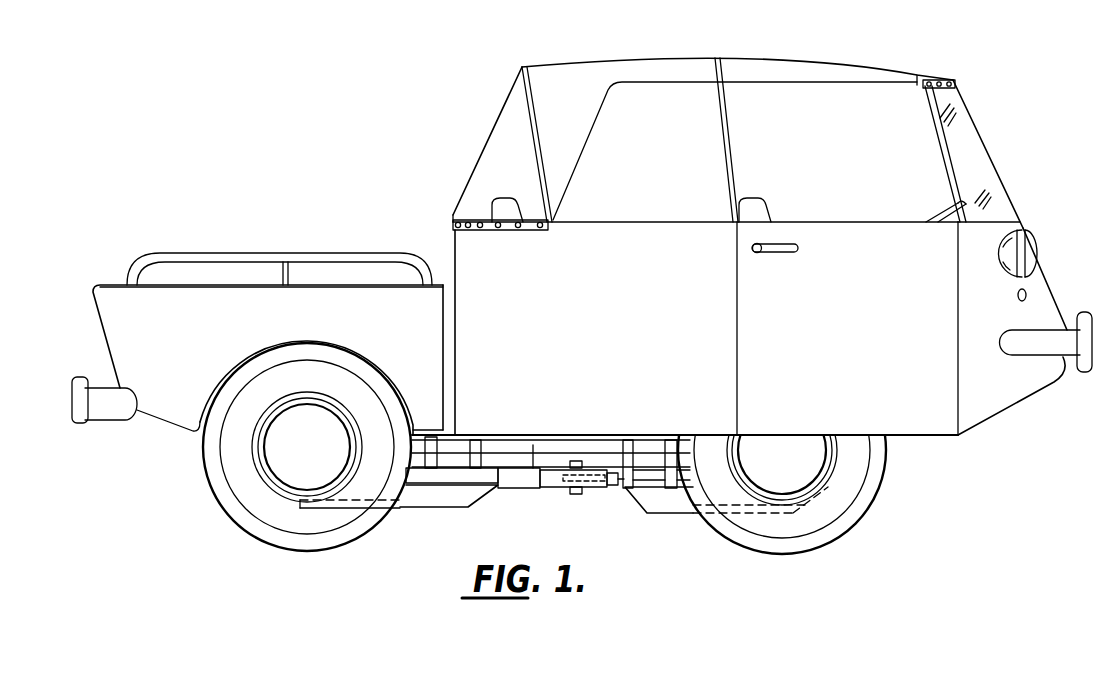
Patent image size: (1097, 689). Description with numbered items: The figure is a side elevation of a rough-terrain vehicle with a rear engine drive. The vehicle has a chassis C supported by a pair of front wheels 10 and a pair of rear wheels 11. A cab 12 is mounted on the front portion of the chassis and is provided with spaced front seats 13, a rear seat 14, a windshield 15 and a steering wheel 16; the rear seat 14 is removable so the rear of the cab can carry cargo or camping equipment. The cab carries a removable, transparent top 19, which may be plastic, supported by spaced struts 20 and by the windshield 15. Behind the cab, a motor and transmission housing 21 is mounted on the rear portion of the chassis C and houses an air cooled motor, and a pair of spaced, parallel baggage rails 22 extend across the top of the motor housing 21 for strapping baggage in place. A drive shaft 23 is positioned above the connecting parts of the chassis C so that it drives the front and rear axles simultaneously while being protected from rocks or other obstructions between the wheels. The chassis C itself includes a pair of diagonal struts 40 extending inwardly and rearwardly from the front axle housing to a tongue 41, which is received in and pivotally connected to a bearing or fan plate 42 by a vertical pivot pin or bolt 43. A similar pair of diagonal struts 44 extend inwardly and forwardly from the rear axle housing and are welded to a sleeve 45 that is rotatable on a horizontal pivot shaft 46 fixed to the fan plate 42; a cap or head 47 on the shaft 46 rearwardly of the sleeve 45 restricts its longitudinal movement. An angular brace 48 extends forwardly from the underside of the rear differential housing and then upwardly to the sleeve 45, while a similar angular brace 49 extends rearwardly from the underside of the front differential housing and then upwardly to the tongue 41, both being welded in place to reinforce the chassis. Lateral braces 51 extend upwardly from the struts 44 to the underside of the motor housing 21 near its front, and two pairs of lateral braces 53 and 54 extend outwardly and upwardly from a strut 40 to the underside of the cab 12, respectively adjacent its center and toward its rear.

The front wheels 10 is at (847, 516).
The rear wheels 11 is at (247, 522).
The cab 12 is at (921, 437).
The front seats 13 is at (761, 208).
The rear seat 14 is at (495, 200).
The windshield 15 is at (968, 144).
The steering wheel 16 is at (941, 216).
The top 19 is at (650, 66).
The struts 20 is at (536, 145).
The motor and transmission housing 21 is at (95, 297).
The baggage rails 22 is at (300, 254).
The drive shaft 23 is at (495, 447).
The diagonal struts 40 is at (672, 478).
The tongue 41 is at (614, 486).
The fan plate 42 is at (563, 488).
The pivot pin 43 is at (583, 461).
The diagonal struts 44 is at (458, 484).
The sleeve 45 is at (517, 488).
The pivot shaft 46 is at (533, 445).
The head 47 is at (470, 441).
The angular brace 48 is at (466, 508).
The angular brace 49 is at (661, 513).
The lateral braces 51 is at (431, 437).
The lateral braces 53 is at (689, 431).
The lateral braces 54 is at (629, 440).
The chassis C is at (553, 492).